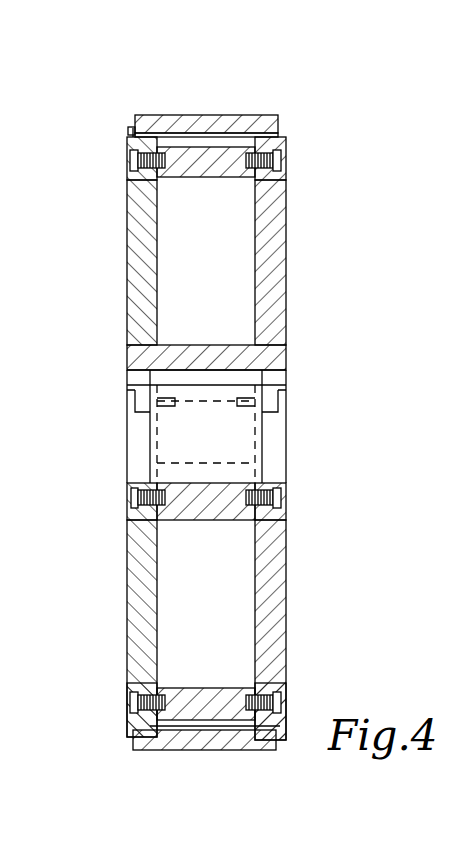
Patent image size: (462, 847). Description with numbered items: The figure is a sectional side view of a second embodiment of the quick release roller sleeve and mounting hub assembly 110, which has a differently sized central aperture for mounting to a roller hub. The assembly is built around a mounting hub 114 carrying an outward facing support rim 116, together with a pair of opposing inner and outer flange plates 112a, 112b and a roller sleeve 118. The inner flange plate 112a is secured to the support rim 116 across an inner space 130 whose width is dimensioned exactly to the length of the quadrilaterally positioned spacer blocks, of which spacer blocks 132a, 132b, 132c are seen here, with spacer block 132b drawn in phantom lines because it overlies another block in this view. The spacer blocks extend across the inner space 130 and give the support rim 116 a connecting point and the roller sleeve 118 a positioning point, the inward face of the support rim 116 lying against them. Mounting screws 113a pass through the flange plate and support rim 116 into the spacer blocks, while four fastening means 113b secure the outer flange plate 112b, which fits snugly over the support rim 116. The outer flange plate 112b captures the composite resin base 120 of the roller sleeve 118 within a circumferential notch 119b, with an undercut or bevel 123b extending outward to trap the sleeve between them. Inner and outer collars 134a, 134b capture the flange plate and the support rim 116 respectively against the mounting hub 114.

The quick release roller sleeve and mounting hub assembly 110 is at (338, 125).
The inner flange plate 112a is at (286, 275).
The outer flange plate 112b is at (127, 142).
The mounting screws 113a is at (287, 157).
The fastening means 113b is at (128, 176).
The mounting hub 114 is at (240, 352).
The support rim 116 is at (127, 325).
The roller sleeve 118 is at (218, 115).
The circumferential notch 119b is at (128, 130).
The base 120 is at (183, 118).
The undercut or bevel 123b is at (133, 128).
The inner space 130 is at (226, 218).
The spacer block 132a is at (233, 157).
The spacer block 132b is at (243, 455).
The spacer block 132c is at (218, 690).
The inner collar 134a is at (277, 440).
The outer collar 134b is at (132, 448).